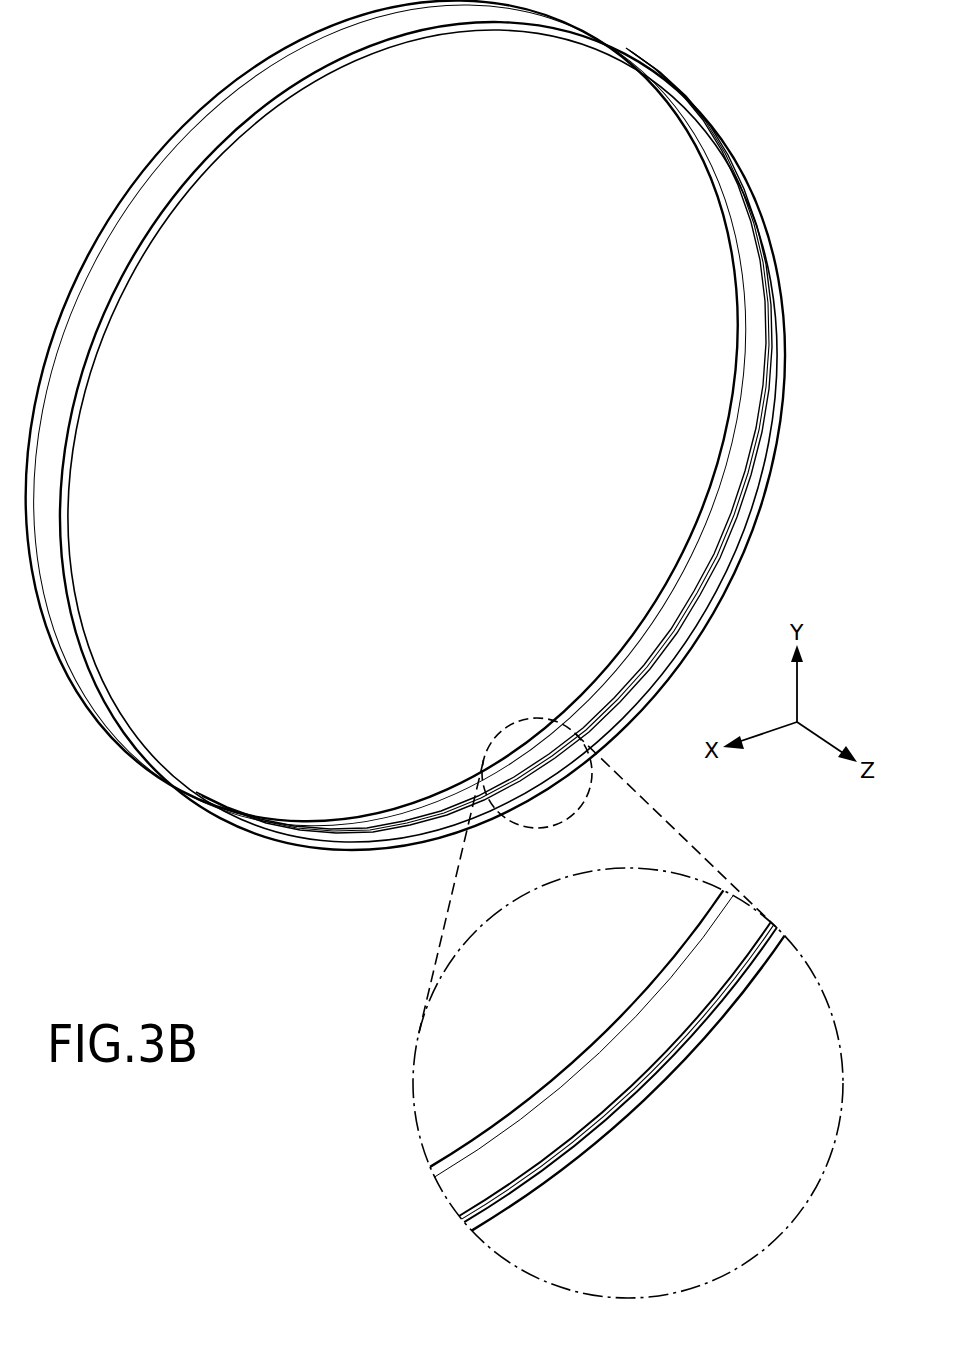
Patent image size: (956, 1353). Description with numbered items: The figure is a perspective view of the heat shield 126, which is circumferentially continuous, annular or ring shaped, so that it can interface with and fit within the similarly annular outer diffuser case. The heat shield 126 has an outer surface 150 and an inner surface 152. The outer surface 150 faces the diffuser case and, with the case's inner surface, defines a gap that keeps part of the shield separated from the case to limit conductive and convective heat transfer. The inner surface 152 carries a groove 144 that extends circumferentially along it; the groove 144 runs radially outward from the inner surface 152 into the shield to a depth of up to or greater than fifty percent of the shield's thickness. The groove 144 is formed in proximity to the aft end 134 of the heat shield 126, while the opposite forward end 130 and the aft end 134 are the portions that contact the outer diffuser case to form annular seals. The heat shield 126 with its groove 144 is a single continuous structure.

The heat shield 126 is at (196, 64).
The outer surface 150 is at (119, 254).
The forward end 130 is at (667, 975).
The inner surface 152 is at (527, 1173).
The groove 144 is at (648, 1085).
The aft end 134 is at (747, 998).